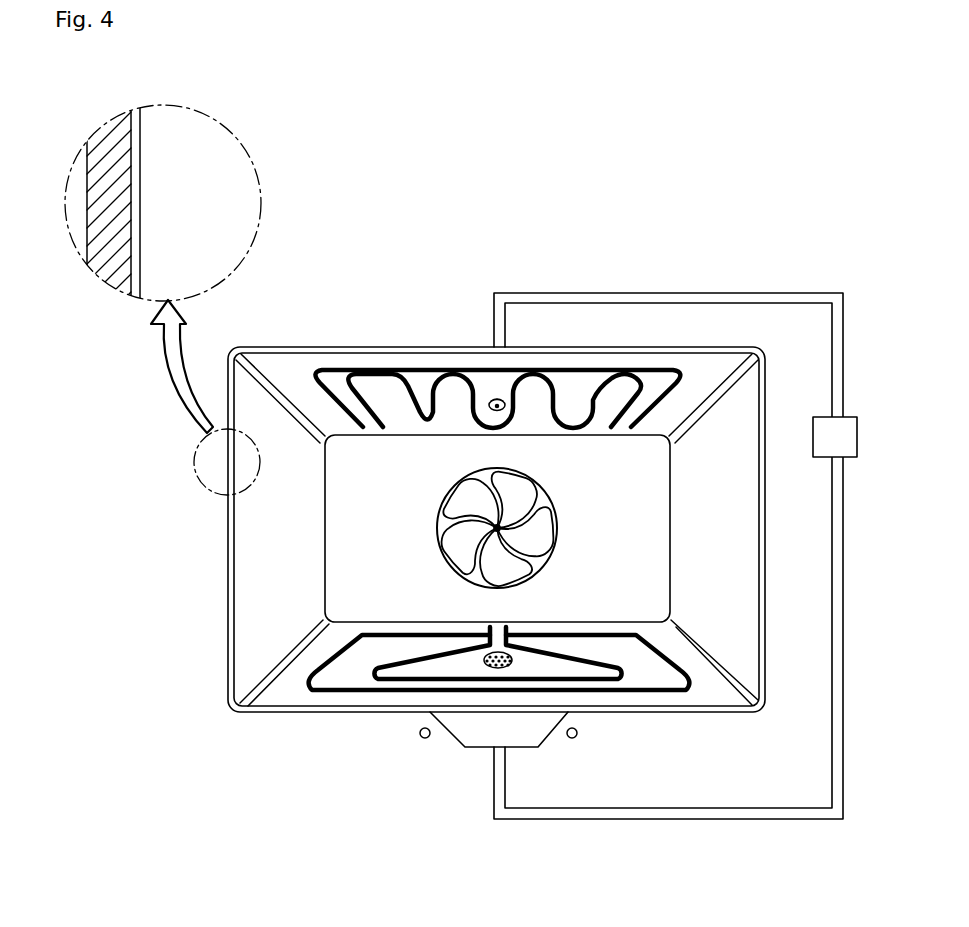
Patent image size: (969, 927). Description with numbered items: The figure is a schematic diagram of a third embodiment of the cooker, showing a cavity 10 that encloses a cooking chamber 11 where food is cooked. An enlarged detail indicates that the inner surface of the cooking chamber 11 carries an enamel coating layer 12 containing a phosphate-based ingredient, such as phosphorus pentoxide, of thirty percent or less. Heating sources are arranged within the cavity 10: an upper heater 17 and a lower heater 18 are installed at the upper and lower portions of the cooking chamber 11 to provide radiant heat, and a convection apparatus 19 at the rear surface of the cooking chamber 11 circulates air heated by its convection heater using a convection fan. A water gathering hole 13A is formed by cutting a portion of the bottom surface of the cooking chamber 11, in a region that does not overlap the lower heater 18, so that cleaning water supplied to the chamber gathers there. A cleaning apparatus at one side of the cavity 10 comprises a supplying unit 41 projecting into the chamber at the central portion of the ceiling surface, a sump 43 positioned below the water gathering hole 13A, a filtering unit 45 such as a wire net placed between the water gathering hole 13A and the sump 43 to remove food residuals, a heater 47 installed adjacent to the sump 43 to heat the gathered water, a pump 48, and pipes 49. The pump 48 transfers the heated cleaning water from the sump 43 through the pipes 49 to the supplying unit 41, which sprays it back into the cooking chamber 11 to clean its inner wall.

The cavity 10 is at (539, 278).
The cooking chamber 11 is at (215, 190).
The enamel coating layer 12 is at (140, 145).
The water gathering hole 13A is at (471, 652).
The upper heater 17 is at (418, 368).
The lower heater 18 is at (626, 690).
The convection apparatus 19 is at (583, 516).
The supplying unit 41 is at (492, 398).
The sump 43 is at (471, 744).
The filtering unit 45 is at (498, 652).
The heater 47 is at (419, 733).
The pump 48 is at (858, 437).
The pipes 49 is at (719, 293).